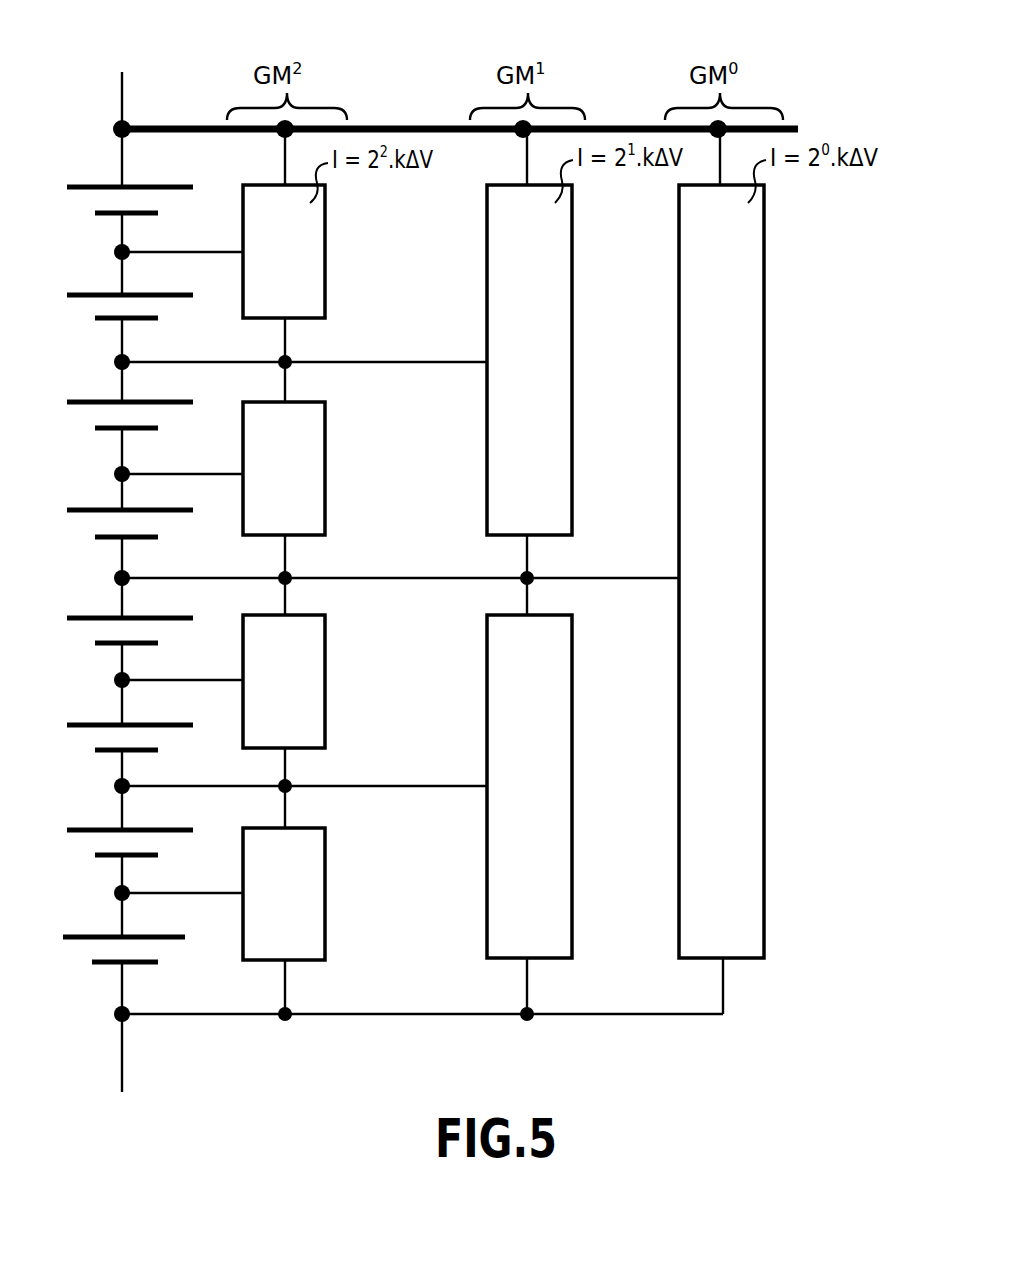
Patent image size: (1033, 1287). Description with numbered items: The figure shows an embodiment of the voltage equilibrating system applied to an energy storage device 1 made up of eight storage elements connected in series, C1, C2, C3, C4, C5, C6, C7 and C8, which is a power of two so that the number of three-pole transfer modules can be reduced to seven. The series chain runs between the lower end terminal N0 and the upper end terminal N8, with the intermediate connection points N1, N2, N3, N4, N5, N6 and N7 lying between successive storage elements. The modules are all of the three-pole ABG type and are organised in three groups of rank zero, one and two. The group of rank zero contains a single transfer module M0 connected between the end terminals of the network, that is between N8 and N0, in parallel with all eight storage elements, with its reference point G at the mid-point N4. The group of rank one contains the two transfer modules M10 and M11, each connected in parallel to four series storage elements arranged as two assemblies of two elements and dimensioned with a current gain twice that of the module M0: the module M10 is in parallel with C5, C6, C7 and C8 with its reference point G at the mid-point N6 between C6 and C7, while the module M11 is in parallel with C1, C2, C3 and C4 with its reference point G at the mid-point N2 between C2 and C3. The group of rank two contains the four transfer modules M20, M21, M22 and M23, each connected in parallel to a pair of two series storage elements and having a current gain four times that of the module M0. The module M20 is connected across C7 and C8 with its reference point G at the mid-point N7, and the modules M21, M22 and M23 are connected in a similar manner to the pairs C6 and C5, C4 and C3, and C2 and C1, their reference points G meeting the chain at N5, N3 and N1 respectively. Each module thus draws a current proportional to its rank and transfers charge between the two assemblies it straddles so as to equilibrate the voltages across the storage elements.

The energy storage device 1 is at (122, 1064).
The storage element C1 is at (126, 956).
The storage element C2 is at (130, 850).
The storage element C3 is at (130, 745).
The storage element C4 is at (130, 638).
The storage element C5 is at (130, 531).
The storage element C6 is at (130, 422).
The storage element C7 is at (130, 315).
The storage element C8 is at (130, 207).
The end terminal node N0 is at (418, 990).
The connection node N1 is at (178, 882).
The mid-point node N2 is at (300, 775).
The connection node N3 is at (178, 669).
The mid-point node N4 is at (396, 567).
The connection node N5 is at (178, 463).
The mid-point node N6 is at (300, 351).
The mid-point node N7 is at (178, 241).
The end terminal node N8 is at (455, 111).
The transfer module M0 is at (721, 543).
The transfer module M10 is at (529, 332).
The transfer module M11 is at (529, 774).
The transfer module M20 is at (284, 223).
The transfer module M21 is at (284, 426).
The transfer module M22 is at (284, 641).
The transfer module M23 is at (284, 881).